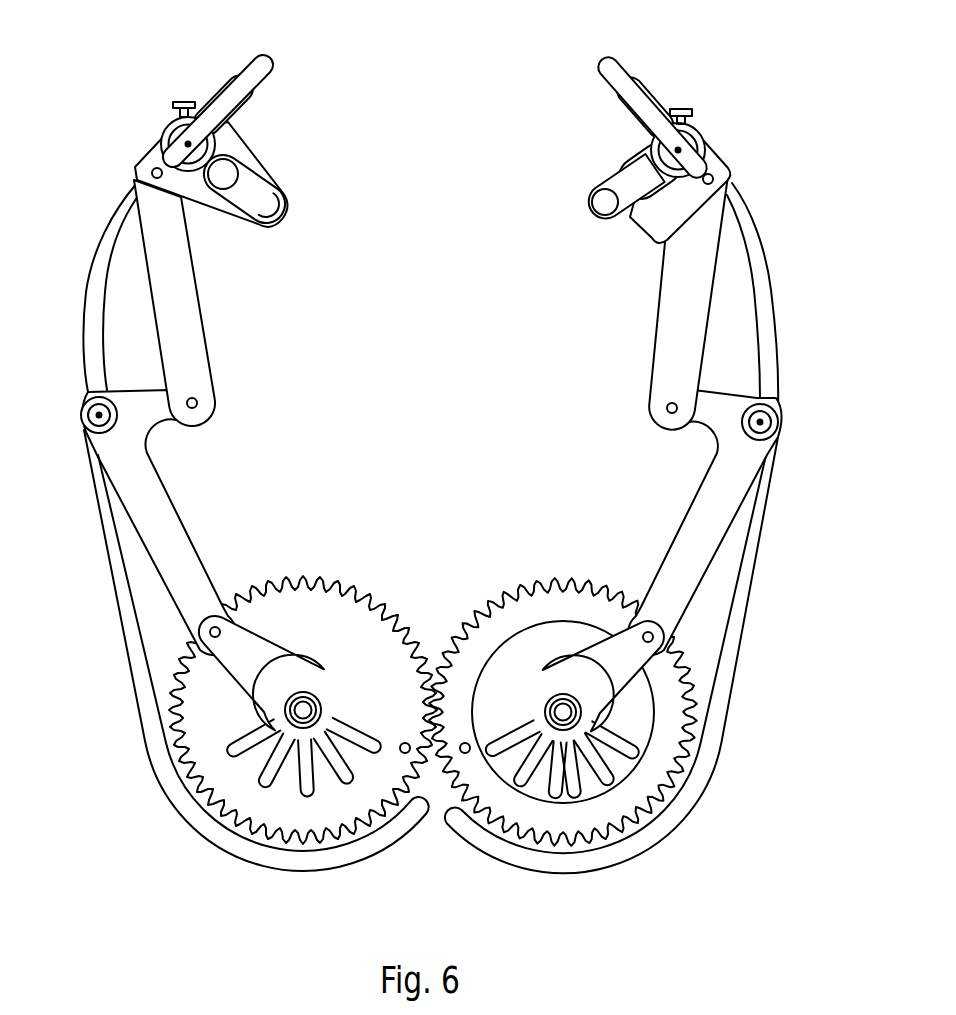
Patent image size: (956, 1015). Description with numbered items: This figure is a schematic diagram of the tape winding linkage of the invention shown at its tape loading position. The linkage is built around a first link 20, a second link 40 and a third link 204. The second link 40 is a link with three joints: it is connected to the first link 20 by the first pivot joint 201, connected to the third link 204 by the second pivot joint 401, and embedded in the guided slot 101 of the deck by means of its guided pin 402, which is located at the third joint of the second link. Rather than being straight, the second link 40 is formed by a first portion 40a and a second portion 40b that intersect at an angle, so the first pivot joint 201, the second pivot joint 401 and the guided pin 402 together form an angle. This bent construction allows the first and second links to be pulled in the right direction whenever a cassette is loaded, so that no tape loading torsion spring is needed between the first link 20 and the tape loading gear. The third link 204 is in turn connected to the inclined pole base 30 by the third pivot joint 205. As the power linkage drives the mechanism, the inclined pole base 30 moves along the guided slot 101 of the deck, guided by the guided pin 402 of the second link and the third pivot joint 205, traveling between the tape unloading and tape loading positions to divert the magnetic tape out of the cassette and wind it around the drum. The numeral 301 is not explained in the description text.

The first link 20 is at (267, 687).
The first pivot joint 201 is at (167, 677).
The third link 204 is at (180, 295).
The third pivot joint 205 is at (710, 178).
The inclined pole base 30 is at (646, 104).
The cylindrical pin 301 is at (627, 177).
The second link 40 is at (138, 477).
The first portion 40a is at (135, 390).
The second portion 40b is at (125, 517).
The second pivot joint 401 is at (676, 407).
The guided pin 402 is at (762, 420).
The guided slot 101 is at (748, 252).